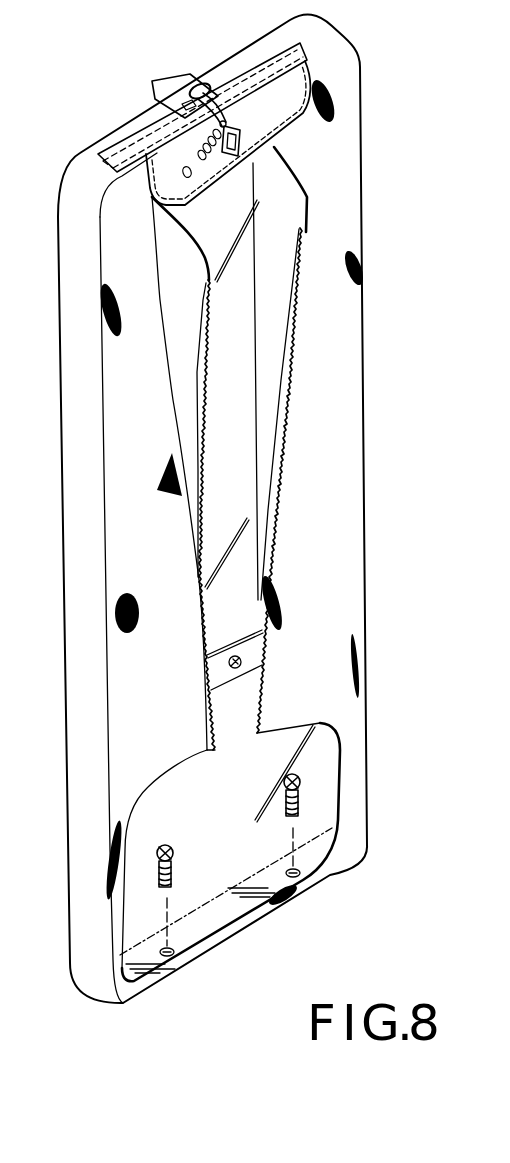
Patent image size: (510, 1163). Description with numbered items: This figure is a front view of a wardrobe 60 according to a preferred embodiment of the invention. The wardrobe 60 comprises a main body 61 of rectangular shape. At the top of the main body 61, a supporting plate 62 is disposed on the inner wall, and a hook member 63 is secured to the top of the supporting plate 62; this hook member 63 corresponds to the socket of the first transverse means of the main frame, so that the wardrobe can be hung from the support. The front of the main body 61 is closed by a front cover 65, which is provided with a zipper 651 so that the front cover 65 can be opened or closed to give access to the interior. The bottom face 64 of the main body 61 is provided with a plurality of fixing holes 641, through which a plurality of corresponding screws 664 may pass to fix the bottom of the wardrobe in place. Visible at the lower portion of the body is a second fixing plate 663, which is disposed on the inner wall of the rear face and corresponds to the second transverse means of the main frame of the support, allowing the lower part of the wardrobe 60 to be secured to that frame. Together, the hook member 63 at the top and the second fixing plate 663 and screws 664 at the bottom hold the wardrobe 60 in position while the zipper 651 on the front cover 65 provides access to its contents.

The wardrobe 60 is at (381, 300).
The main body 61 is at (361, 122).
The supporting plate 62 is at (260, 66).
The hook member 63 is at (173, 88).
The bottom face 64 is at (216, 934).
The fixing holes 641 is at (300, 875).
The front cover 65 is at (348, 560).
The zipper 651 is at (280, 477).
The second fixing plate 663 is at (240, 658).
The screws 664 is at (302, 789).